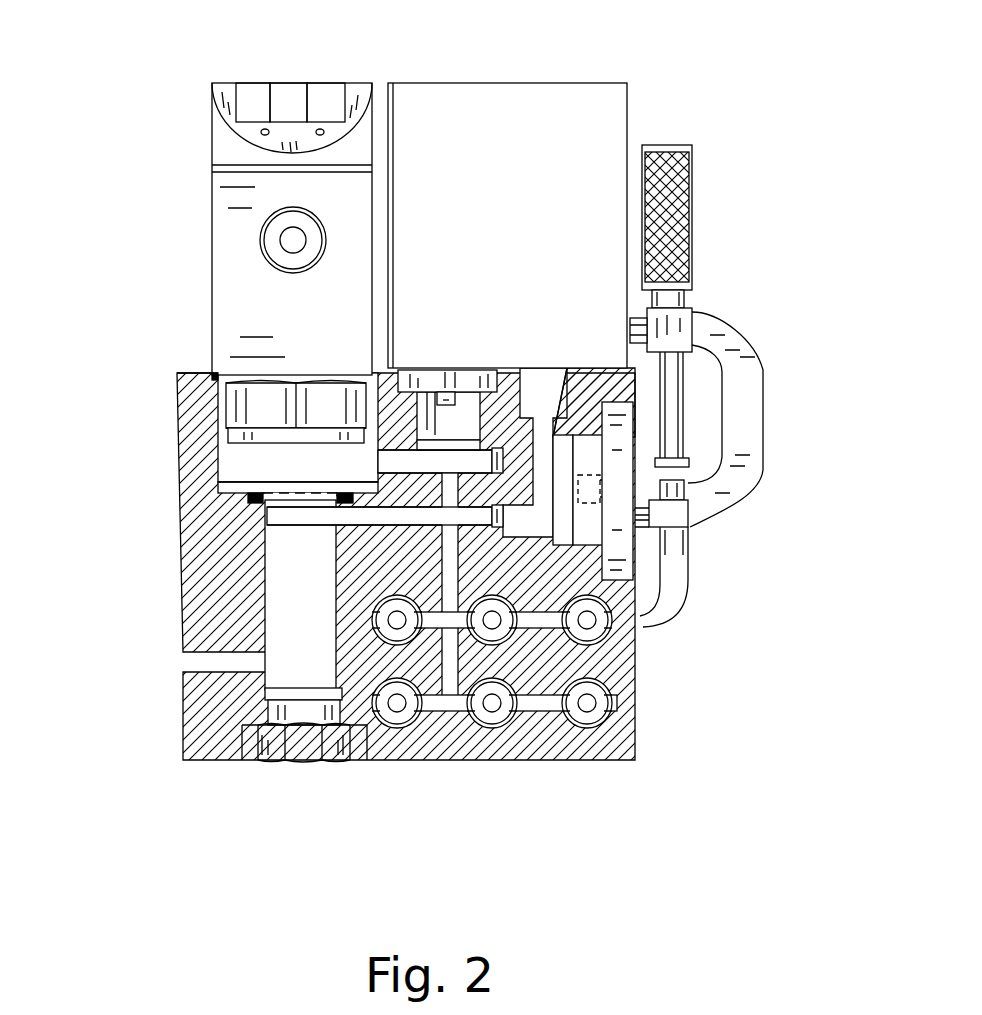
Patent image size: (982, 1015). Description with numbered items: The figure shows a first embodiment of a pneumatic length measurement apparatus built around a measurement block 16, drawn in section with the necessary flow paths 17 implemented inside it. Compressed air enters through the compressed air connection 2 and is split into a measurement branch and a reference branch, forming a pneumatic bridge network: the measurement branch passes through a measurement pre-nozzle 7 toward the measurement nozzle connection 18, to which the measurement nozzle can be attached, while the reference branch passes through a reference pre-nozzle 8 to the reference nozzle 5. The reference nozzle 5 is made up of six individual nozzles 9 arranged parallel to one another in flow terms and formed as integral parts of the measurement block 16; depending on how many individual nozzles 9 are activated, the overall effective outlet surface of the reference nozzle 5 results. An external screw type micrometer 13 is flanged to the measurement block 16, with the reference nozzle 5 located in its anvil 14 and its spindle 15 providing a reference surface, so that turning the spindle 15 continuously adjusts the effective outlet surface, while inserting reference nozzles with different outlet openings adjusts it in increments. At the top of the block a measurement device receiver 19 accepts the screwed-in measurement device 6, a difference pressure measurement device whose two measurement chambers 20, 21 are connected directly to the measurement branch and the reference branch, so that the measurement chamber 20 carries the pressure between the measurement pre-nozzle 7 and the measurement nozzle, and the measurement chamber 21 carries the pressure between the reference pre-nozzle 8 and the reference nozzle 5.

The compressed air connection 2 is at (540, 358).
The reference nozzle 5 is at (687, 482).
The measurement device 6 is at (334, 344).
The measurement pre-nozzle 7 is at (580, 368).
The reference pre-nozzle 8 is at (510, 370).
The individual nozzles 9 is at (397, 706).
The external screw type micrometer 13 is at (736, 308).
The anvil 14 is at (683, 472).
The spindle 15 is at (673, 387).
The measurement block 16 is at (205, 745).
The flow paths 17 is at (460, 550).
The measurement nozzle connection 18 is at (158, 663).
The measurement device receiver 19 is at (212, 368).
The measurement chamber 20 is at (232, 488).
The measurement chamber 21 is at (235, 455).